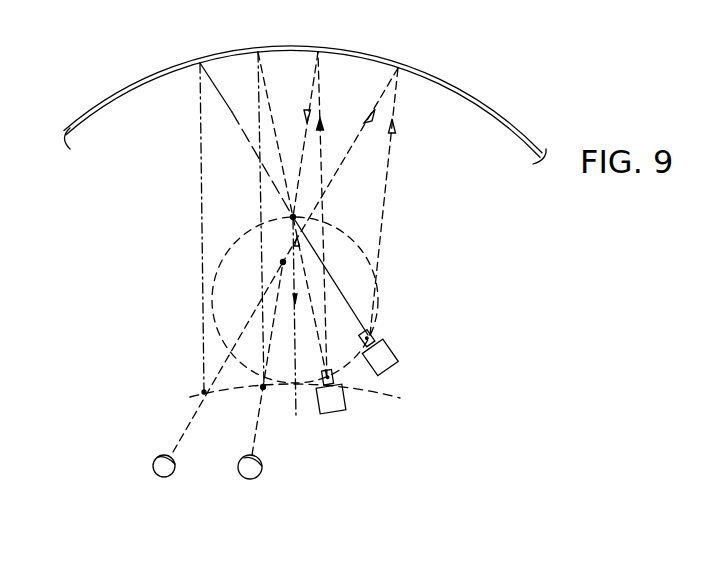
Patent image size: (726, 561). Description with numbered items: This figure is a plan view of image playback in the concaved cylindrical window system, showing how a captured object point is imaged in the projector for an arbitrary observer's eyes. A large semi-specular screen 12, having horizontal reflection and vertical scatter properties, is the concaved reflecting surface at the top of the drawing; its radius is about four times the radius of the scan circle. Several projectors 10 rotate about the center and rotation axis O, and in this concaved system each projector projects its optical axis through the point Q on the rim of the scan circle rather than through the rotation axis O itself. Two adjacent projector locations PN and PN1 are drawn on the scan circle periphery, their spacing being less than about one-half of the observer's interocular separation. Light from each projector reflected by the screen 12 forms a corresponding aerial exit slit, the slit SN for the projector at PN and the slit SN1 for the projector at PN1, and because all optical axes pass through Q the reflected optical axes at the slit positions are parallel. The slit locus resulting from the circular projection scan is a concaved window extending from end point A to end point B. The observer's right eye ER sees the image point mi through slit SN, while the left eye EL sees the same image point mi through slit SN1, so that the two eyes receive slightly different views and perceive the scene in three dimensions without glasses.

The screen 12 is at (106, 104).
The projector 10 is at (342, 411).
The point Q is at (291, 216).
The rotation axis O is at (298, 313).
The end point A of slit locus A is at (396, 394).
The end point B of slit locus B is at (192, 401).
The left eye EL is at (178, 477).
The right eye ER is at (267, 478).
The projector location P_N PN is at (334, 381).
The projector location P_N+1 PN1 is at (377, 341).
The aerial exit slit S_N SN is at (262, 383).
The aerial exit slit S_N+1 SN1 is at (200, 388).
The image point m_i mi is at (283, 262).